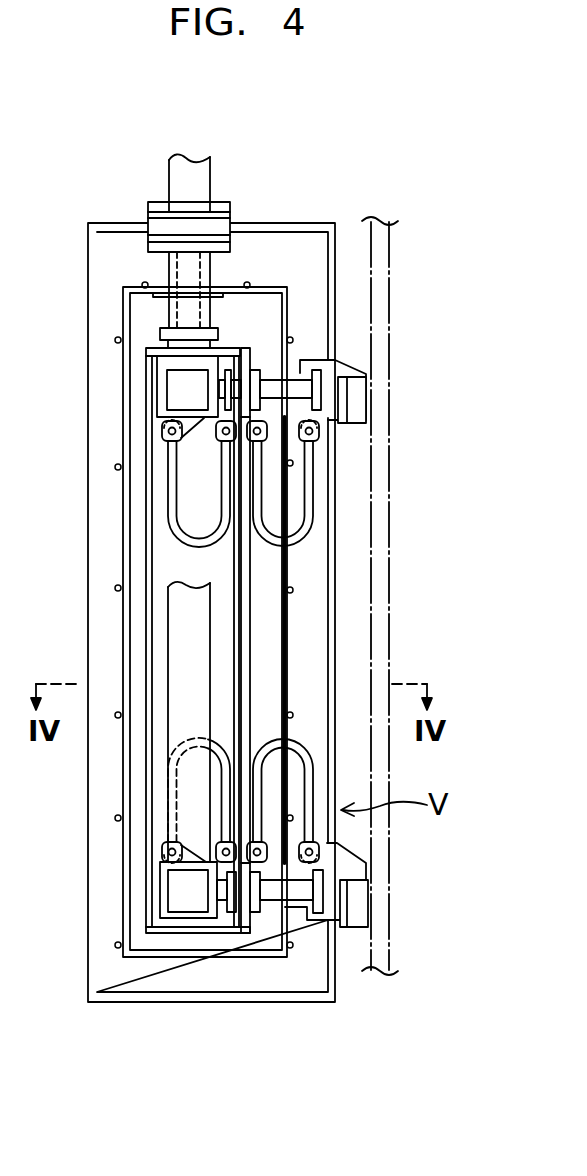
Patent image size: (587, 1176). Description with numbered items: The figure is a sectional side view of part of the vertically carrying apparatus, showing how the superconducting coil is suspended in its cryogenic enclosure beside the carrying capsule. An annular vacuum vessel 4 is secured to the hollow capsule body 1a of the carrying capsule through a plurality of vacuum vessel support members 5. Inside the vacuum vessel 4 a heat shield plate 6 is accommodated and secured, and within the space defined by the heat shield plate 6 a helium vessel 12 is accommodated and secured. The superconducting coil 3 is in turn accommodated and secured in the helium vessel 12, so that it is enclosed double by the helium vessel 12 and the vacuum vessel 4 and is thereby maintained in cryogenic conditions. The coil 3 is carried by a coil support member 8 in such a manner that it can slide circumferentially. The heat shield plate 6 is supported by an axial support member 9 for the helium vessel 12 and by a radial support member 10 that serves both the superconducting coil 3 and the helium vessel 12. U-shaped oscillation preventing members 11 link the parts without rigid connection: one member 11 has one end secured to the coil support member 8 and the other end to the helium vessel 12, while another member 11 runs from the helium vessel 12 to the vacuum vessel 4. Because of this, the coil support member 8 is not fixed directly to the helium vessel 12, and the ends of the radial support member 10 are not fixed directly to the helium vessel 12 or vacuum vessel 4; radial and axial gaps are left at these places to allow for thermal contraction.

The hollow capsule body 1a is at (388, 472).
The superconducting coil 3 is at (177, 397).
The vacuum vessel 4 is at (335, 610).
The vacuum vessel support member 5 is at (168, 179).
The heat shield plate 6 is at (288, 653).
The coil support member 8 is at (160, 372).
The axial support member 9 is at (170, 268).
The radial support member 10 is at (300, 373).
The U-shaped oscillation preventing member 11 is at (168, 483).
The helium vessel 12 is at (250, 692).